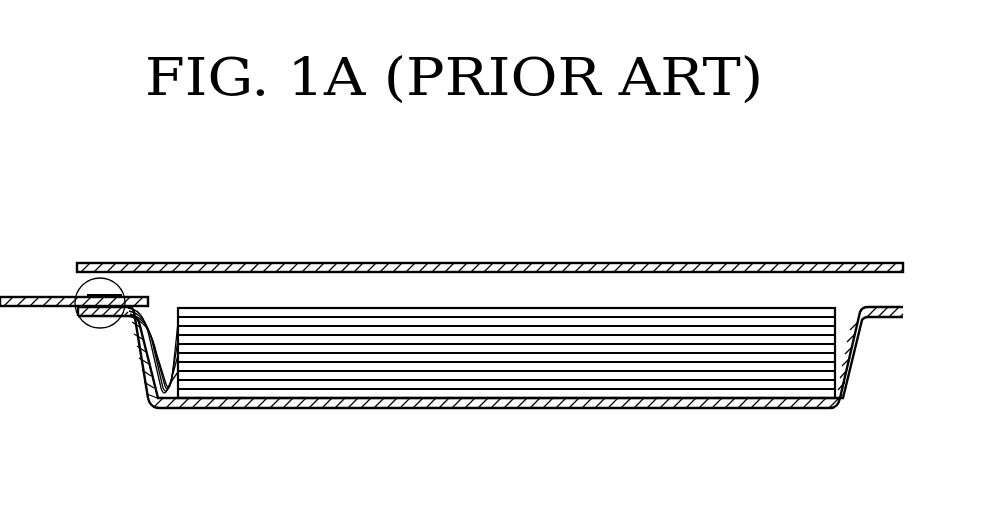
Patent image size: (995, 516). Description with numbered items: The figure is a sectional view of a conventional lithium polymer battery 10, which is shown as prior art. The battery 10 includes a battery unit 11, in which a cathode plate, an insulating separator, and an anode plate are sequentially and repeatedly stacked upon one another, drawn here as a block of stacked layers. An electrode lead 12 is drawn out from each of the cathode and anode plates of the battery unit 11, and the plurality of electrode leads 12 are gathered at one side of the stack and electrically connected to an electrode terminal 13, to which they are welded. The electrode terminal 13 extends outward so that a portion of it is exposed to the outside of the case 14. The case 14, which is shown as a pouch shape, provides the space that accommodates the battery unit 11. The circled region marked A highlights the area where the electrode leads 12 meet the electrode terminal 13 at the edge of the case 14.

The lithium polymer battery 10 is at (783, 233).
The battery unit 11 is at (558, 383).
The electrode lead 12 is at (163, 400).
The electrode terminal 13 is at (31, 298).
The case 14 is at (852, 372).
The detail region A is at (84, 328).